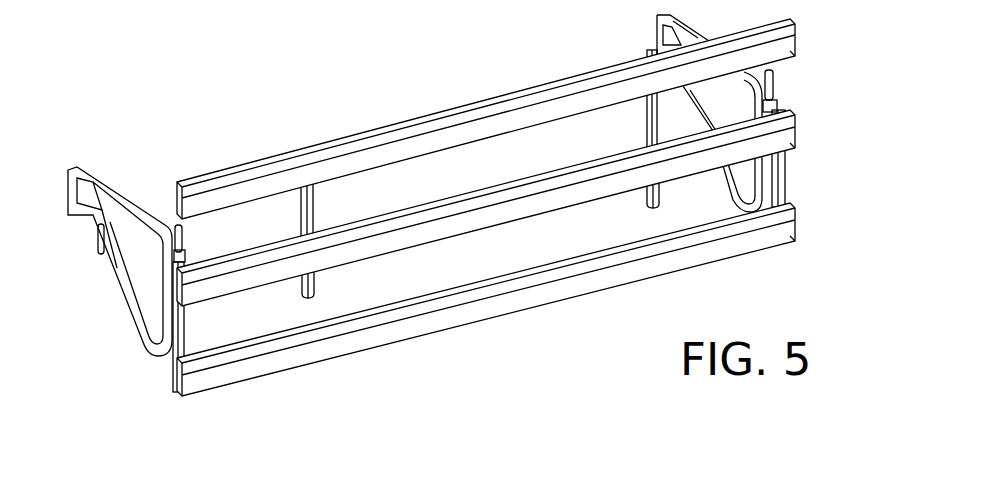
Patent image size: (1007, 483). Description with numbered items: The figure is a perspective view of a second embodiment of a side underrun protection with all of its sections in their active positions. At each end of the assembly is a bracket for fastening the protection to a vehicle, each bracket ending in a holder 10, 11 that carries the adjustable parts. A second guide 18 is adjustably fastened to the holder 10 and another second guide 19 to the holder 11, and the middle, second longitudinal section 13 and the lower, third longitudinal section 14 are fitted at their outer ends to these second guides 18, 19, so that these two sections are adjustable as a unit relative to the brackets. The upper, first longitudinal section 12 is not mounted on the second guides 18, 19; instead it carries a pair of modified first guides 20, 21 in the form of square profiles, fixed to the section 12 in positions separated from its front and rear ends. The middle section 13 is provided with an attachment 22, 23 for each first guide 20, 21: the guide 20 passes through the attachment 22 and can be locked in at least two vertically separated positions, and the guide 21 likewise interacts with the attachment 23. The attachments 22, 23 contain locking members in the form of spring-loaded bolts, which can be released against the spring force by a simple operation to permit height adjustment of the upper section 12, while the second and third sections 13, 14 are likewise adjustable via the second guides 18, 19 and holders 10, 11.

The holder 10 is at (170, 373).
The holder 11 is at (785, 165).
The first longitudinal section 12 is at (347, 148).
The second longitudinal section 13 is at (470, 203).
The third longitudinal section 14 is at (380, 340).
The second guide 18 is at (190, 333).
The second guide 19 is at (785, 188).
The first guide 20 is at (298, 212).
The first guide 21 is at (643, 120).
The attachment 22 is at (302, 305).
The attachment 23 is at (645, 212).